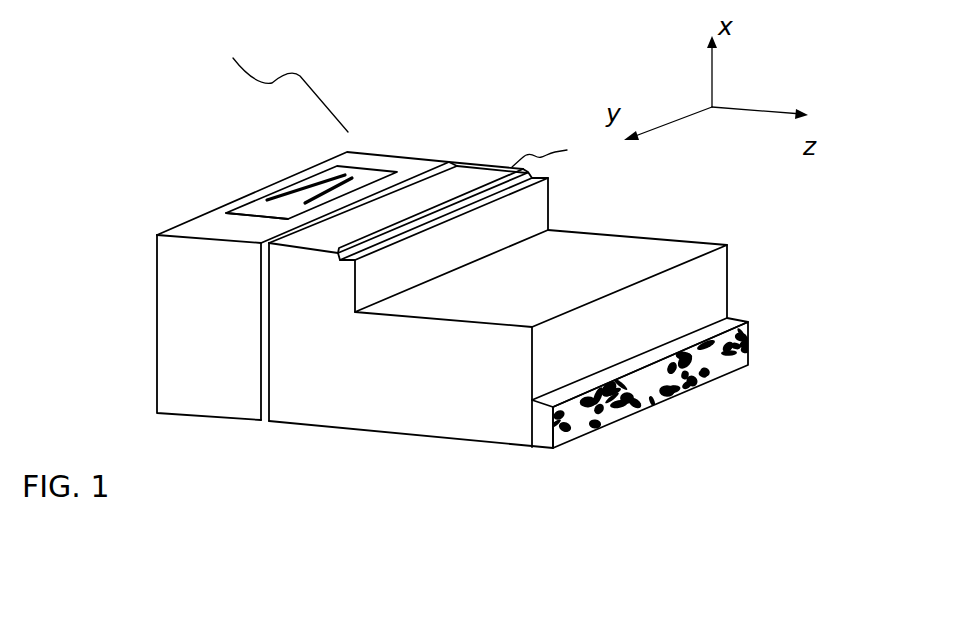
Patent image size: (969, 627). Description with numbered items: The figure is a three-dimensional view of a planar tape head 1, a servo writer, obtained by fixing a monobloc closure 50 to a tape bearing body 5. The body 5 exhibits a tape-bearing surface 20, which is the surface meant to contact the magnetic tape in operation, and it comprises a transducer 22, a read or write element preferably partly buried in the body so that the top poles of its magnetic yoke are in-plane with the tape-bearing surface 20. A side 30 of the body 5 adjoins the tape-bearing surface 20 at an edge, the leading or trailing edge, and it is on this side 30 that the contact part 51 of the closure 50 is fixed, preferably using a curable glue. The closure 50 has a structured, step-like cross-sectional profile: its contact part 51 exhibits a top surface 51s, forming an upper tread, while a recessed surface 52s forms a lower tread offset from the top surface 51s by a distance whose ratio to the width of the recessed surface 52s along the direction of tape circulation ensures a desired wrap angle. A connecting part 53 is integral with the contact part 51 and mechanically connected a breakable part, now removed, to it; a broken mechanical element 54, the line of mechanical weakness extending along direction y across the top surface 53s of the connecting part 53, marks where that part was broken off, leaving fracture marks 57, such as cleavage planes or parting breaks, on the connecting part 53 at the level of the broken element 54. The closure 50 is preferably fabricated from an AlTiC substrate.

The tape head 1 is at (300, 507).
The tape bearing body 5 is at (167, 355).
The tape-bearing surface 20 is at (377, 170).
The transducer 22 is at (250, 216).
The side of the body 30 is at (268, 328).
The monobloc closure 50 is at (702, 403).
The contact part 51 is at (287, 405).
The top surface of the contact part 51s is at (355, 230).
The recessed surface 52s is at (455, 242).
The connecting part 53 is at (432, 425).
The top surface of the connecting part 53s is at (458, 302).
The broken mechanical element 54 is at (535, 433).
The fracture marks 57 is at (752, 328).